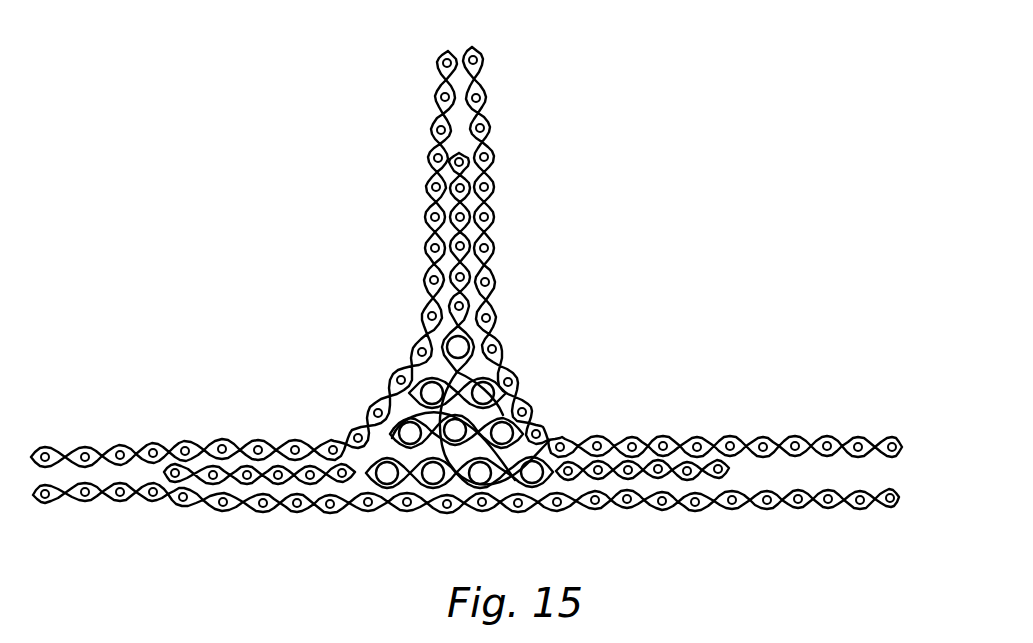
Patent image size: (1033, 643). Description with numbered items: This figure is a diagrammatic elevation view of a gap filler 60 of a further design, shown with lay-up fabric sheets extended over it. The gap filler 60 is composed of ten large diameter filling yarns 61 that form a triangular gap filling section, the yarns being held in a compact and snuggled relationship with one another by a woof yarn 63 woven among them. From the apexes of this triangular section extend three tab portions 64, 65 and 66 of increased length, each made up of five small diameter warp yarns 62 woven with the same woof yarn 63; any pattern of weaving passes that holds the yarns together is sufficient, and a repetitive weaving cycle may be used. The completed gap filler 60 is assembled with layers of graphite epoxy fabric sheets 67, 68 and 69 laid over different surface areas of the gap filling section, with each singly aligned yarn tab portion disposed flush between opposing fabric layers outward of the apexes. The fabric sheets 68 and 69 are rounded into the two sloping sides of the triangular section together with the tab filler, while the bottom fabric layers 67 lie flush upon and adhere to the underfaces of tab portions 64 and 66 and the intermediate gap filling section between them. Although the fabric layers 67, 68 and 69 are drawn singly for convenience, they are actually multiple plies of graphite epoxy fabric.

The gap filler 60 is at (366, 483).
The large diameter filling yarns 61 is at (472, 478).
The small diameter warp yarns 62 is at (460, 240).
The woof yarn 63 is at (248, 472).
The tab portion 64 is at (200, 462).
The tab portion 65 is at (470, 177).
The tab portion 66 is at (673, 460).
The bottom fabric layers 67 is at (487, 518).
The fabric sheets 68 is at (427, 227).
The fabric sheets 69 is at (490, 288).